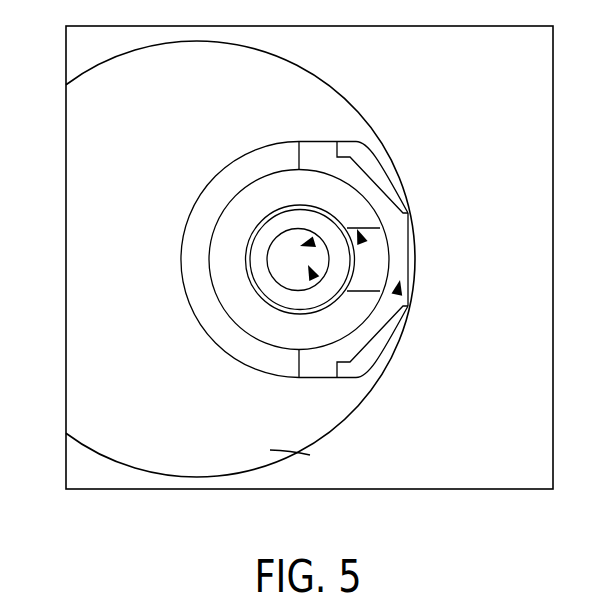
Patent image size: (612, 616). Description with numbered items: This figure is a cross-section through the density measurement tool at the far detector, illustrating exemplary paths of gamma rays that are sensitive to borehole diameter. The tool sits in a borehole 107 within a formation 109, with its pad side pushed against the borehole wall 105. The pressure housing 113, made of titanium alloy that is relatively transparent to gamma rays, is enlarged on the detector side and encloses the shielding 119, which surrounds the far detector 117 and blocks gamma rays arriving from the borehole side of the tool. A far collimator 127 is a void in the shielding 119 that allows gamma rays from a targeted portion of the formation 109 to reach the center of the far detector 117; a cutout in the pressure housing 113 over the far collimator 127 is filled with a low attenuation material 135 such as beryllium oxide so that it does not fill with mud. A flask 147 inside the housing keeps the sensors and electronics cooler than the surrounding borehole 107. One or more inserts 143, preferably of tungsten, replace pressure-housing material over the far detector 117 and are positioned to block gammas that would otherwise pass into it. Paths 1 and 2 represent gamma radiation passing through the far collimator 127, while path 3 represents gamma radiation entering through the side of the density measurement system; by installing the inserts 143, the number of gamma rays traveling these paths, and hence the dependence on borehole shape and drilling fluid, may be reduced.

The path 1 is at (397, 295).
The path 2 is at (314, 242).
The path 3 is at (314, 279).
The borehole wall 105 is at (290, 459).
The borehole 107 is at (78, 352).
The formation 109 is at (539, 74).
The pressure housing 113 is at (252, 165).
The far detector 117 is at (280, 246).
The shielding 119 is at (236, 213).
The far collimator 127 is at (377, 248).
The low attenuation material 135 is at (412, 248).
The inserts 143 is at (380, 170).
The flask 147 is at (298, 204).